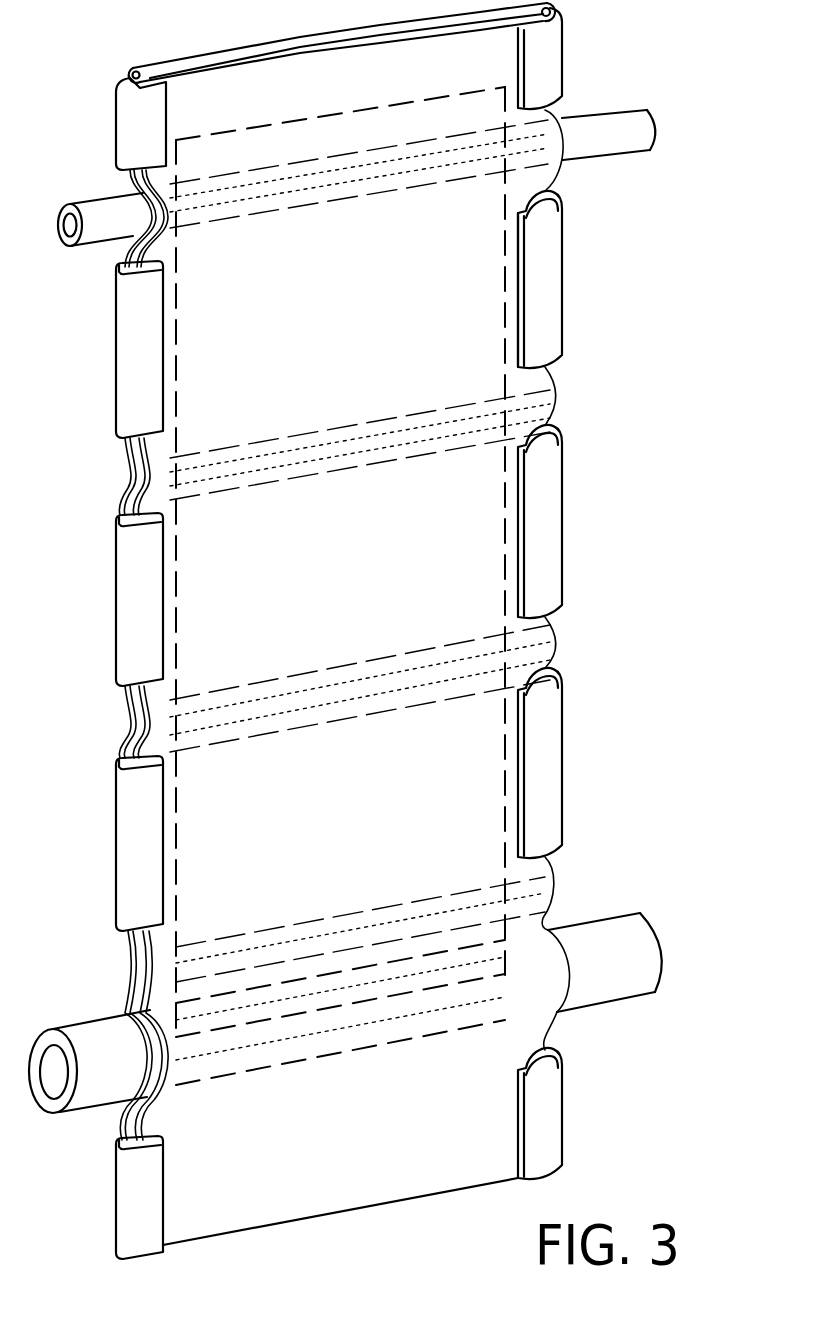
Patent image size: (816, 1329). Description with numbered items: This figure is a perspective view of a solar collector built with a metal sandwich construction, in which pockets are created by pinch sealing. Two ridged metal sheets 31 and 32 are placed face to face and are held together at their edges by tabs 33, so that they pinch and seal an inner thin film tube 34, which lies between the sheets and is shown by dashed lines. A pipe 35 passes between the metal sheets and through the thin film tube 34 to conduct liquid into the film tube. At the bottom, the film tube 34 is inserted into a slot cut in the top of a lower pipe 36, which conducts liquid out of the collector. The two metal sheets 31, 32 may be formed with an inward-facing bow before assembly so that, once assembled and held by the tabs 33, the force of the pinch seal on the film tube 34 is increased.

The metal sheet 31 is at (246, 50).
The metal sheet 32 is at (280, 56).
The tab 33 is at (545, 270).
The thin film tube 34 is at (177, 555).
The pipe 35 is at (655, 120).
The lower pipe 36 is at (583, 1012).